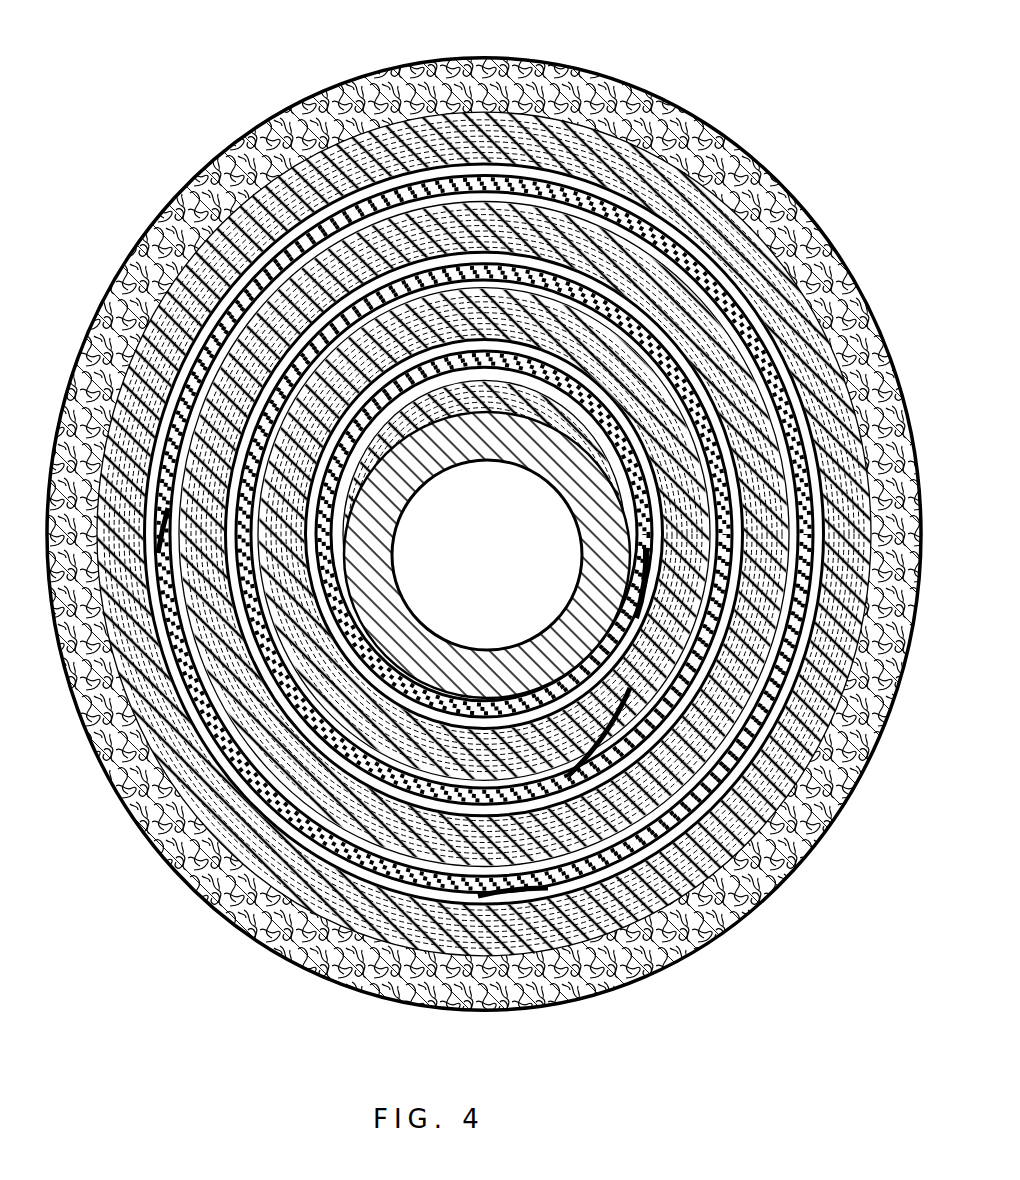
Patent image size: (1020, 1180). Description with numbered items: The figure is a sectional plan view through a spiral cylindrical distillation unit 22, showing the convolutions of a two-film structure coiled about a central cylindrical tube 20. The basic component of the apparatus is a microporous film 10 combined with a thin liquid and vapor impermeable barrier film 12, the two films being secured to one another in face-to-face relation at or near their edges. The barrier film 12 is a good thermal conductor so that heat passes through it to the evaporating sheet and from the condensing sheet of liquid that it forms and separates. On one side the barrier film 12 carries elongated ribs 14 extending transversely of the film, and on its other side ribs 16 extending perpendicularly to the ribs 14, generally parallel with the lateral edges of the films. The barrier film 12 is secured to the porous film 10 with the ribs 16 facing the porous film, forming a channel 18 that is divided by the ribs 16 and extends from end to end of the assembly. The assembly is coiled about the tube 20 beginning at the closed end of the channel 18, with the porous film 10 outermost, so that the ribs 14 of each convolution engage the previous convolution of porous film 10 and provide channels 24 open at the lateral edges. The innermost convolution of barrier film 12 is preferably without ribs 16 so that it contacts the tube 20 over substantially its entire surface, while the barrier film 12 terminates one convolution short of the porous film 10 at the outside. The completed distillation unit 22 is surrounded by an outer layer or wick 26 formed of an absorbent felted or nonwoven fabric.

The microporous film 10 is at (388, 233).
The barrier film 12 is at (512, 683).
The ribs 14 is at (560, 150).
The ribs 16 is at (452, 186).
The channel 18 is at (478, 182).
The cylindrical tube 20 is at (498, 423).
The distillation unit 22 is at (152, 885).
The channels 24 is at (648, 165).
The outer layer or wick 26 is at (828, 176).